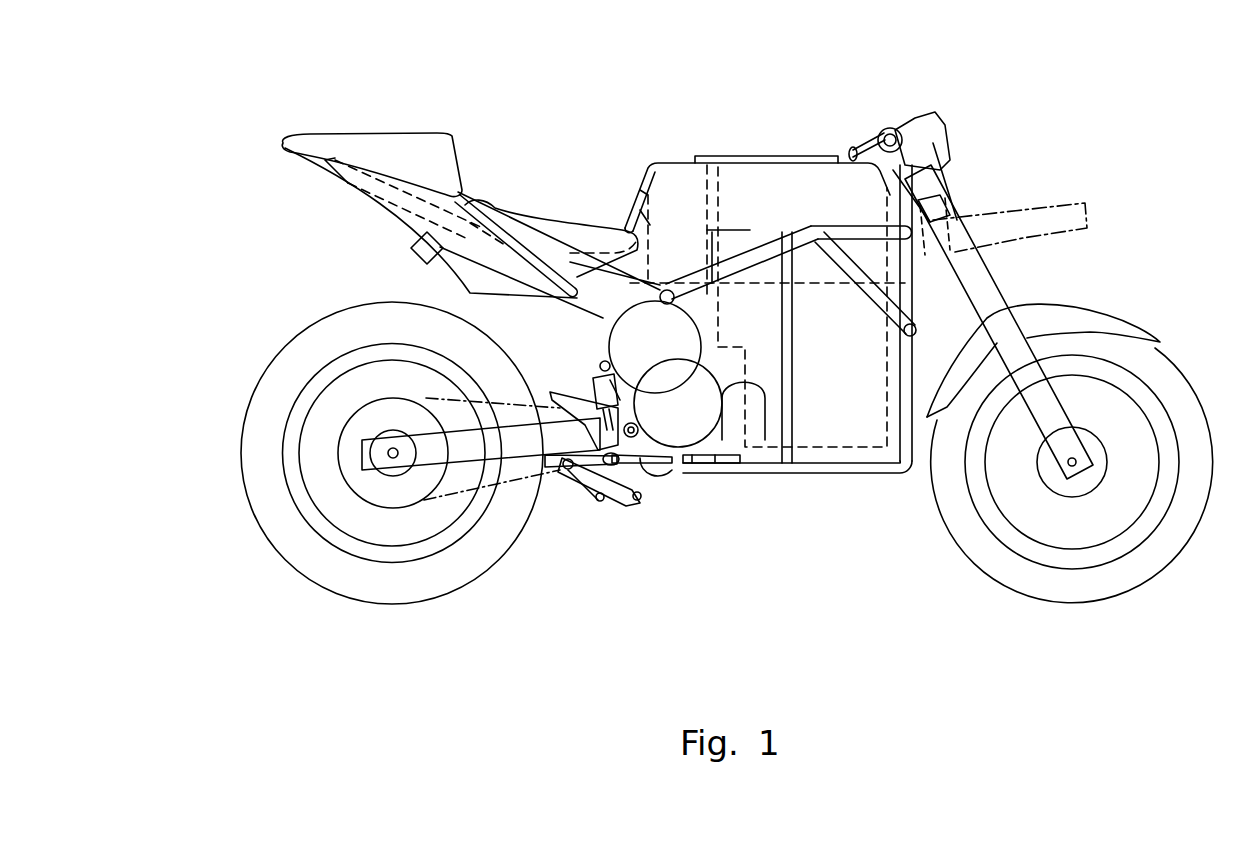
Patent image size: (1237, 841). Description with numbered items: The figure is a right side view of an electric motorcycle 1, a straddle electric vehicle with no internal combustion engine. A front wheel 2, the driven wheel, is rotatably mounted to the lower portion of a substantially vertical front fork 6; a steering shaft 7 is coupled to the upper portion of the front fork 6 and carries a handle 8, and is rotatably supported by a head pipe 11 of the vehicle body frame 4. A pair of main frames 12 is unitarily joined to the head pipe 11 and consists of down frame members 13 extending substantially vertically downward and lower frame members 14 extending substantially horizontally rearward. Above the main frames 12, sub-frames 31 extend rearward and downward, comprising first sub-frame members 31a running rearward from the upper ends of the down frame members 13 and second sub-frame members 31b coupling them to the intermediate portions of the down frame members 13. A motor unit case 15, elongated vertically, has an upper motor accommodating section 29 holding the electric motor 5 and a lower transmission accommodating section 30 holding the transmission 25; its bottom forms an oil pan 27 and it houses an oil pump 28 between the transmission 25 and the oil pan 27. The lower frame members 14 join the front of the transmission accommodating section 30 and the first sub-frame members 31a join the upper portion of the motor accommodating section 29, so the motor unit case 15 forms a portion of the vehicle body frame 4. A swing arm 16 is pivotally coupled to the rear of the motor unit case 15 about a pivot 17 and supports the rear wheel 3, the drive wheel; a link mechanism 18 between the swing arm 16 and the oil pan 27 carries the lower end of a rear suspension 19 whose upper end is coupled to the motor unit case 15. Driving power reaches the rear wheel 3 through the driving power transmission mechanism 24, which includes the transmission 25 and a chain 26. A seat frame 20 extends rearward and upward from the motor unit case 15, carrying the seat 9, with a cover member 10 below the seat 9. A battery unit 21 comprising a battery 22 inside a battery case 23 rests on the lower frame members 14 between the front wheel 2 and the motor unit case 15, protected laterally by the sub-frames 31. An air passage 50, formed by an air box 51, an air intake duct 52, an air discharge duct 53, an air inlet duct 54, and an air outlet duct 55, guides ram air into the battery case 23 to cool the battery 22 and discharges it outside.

The electric motorcycle 1 is at (1074, 110).
The front wheel 2 is at (1020, 578).
The rear wheel 3 is at (435, 583).
The vehicle body frame 4 is at (925, 312).
The electric motor 5 is at (605, 345).
The front fork 6 is at (990, 300).
The steering shaft 7 is at (937, 210).
The handle 8 is at (913, 130).
The seat 9 is at (521, 228).
The cover member 10 is at (413, 220).
The head pipe 11 is at (933, 197).
The main frames 12 is at (905, 463).
The down frame members 13 is at (907, 393).
The lower frame members 14 is at (856, 467).
The motor unit case 15 is at (720, 440).
The swing arm 16 is at (473, 517).
The pivot 17 is at (597, 380).
The link mechanism 18 is at (598, 522).
The rear suspension 19 is at (565, 478).
The seat frame 20 is at (345, 185).
The battery unit 21 is at (817, 452).
The battery 22 is at (800, 462).
The battery case 23 is at (770, 480).
The driving power transmission mechanism 24 is at (512, 485).
The transmission 25 is at (690, 427).
The chain 26 is at (433, 490).
The oil pan 27 is at (660, 505).
The oil pump 28 is at (672, 495).
The motor accommodating section 29 is at (610, 312).
The transmission accommodating section 30 is at (745, 420).
The sub-frames 31 is at (745, 255).
The first sub-frame members 31a is at (852, 228).
The second sub-frame members 31b is at (787, 232).
The air passage 50 is at (728, 200).
The air box 51 is at (677, 150).
The air intake duct 52 is at (1060, 200).
The air discharge duct 53 is at (485, 222).
The air inlet duct 54 is at (885, 147).
The air outlet duct 55 is at (645, 210).